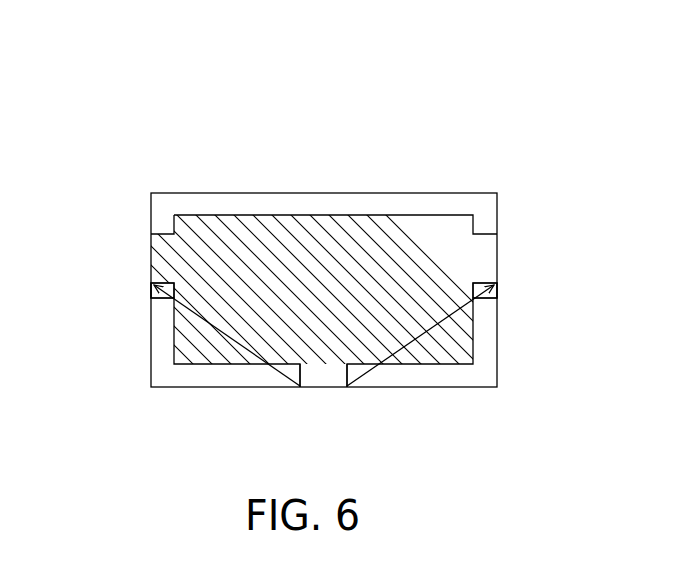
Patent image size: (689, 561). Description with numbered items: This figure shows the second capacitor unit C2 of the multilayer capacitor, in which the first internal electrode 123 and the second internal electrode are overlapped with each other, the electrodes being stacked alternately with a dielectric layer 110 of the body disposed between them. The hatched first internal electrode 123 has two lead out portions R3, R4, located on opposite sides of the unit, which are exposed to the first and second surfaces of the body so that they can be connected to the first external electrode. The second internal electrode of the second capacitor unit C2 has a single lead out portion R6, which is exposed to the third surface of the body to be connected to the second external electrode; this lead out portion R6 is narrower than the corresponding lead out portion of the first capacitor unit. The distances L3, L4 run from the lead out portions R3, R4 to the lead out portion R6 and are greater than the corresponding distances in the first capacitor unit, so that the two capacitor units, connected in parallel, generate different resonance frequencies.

The second capacitor unit C2 is at (423, 156).
The dielectric layer 110 is at (160, 348).
The first internal electrode 123 is at (270, 248).
The lead out portion R3 is at (160, 262).
The lead out portion R4 is at (487, 262).
The lead out portion R6 is at (323, 370).
The distance L3 is at (227, 335).
The distance L4 is at (420, 335).